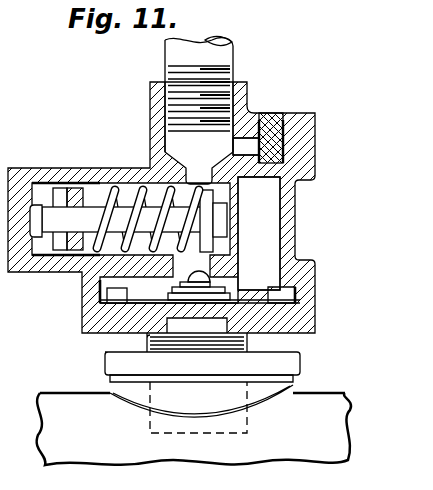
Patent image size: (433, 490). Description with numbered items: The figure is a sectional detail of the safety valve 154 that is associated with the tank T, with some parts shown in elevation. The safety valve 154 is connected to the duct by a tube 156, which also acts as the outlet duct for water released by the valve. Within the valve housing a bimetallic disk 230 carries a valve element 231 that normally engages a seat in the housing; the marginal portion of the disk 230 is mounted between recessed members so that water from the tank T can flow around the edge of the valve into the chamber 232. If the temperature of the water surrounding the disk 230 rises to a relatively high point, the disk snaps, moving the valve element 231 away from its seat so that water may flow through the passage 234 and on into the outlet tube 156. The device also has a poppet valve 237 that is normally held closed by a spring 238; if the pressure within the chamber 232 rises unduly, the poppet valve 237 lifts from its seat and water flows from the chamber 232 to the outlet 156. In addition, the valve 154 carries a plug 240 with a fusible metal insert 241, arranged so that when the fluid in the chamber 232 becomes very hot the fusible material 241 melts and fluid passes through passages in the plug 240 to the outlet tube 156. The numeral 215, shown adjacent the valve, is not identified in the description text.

The safety valve 154 is at (72, 285).
The tube 156 is at (229, 58).
The conduit 215 is at (0, 126).
The bimetallic disk 230 is at (230, 302).
The valve element 231 is at (187, 283).
The chamber 232 is at (270, 228).
The passage 234 is at (208, 265).
The poppet valve 237 is at (215, 212).
The spring 238 is at (137, 190).
The plug 240 is at (273, 113).
The fusible metal insert 241 is at (262, 147).
The tank T is at (75, 407).